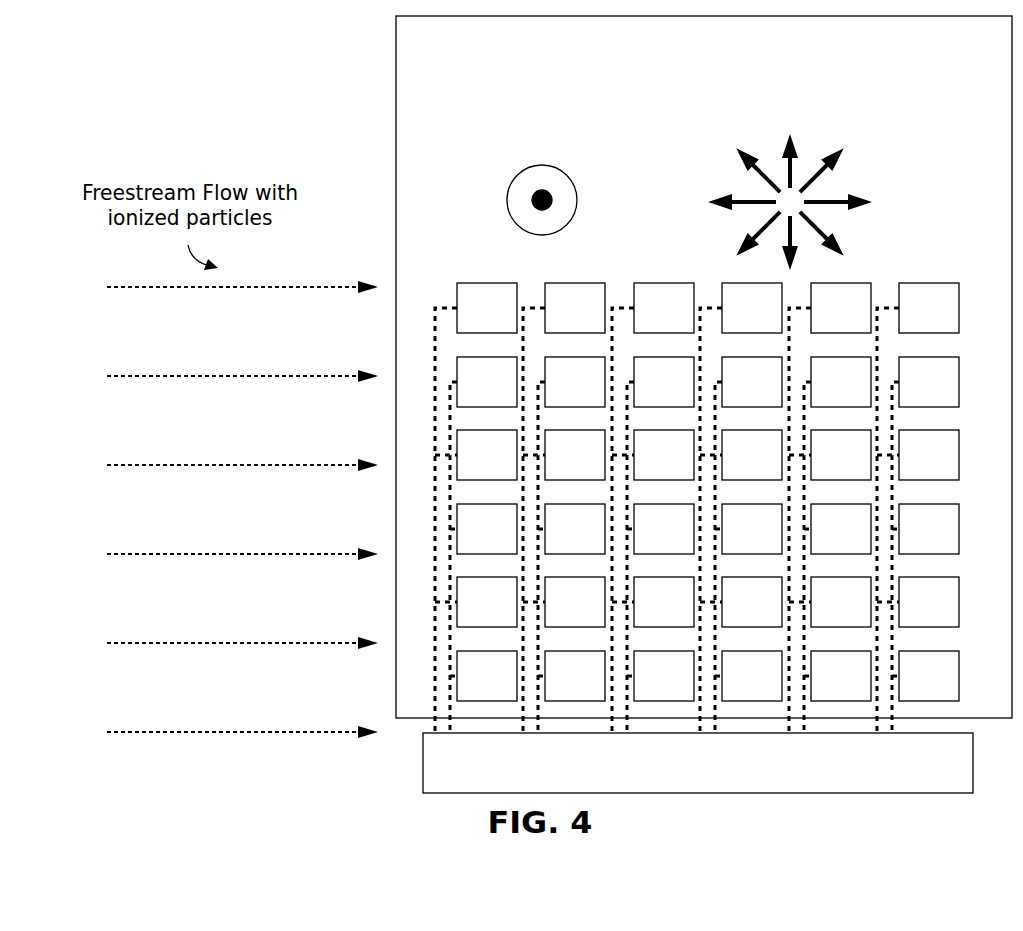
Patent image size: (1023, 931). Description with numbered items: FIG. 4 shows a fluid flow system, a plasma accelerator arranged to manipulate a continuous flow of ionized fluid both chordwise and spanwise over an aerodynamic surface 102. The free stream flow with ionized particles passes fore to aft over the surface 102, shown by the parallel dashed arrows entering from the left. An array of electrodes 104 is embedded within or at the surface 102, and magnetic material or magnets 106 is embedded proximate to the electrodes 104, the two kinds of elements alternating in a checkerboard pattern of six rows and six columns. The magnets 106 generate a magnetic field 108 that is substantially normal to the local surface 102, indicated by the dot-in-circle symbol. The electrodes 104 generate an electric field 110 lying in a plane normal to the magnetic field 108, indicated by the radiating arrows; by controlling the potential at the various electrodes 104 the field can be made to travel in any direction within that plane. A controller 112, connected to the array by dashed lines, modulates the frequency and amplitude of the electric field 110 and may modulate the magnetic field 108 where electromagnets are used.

The surface 102 is at (704, 367).
The electrodes 104 is at (708, 492).
The magnets 106 is at (708, 492).
The magnetic field 108 is at (574, 156).
The electric field 110 is at (842, 139).
The controller 112 is at (698, 763).